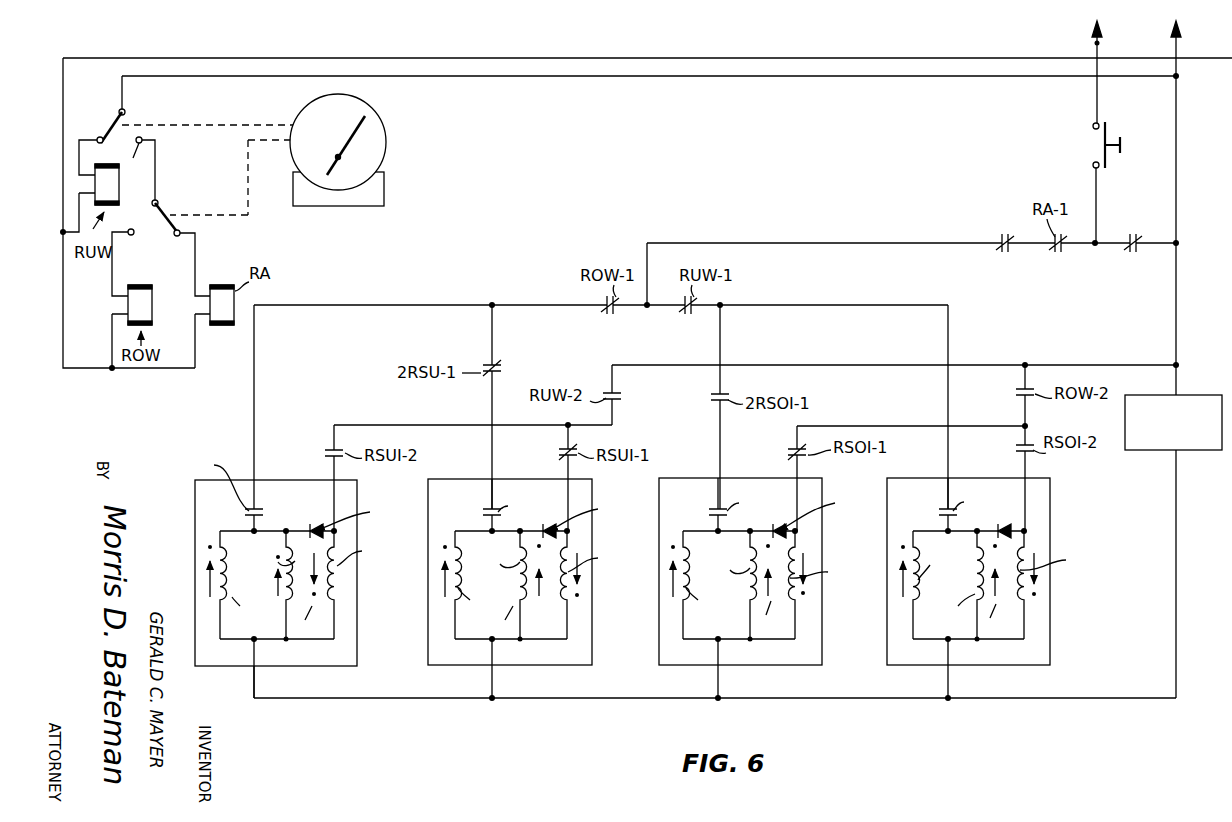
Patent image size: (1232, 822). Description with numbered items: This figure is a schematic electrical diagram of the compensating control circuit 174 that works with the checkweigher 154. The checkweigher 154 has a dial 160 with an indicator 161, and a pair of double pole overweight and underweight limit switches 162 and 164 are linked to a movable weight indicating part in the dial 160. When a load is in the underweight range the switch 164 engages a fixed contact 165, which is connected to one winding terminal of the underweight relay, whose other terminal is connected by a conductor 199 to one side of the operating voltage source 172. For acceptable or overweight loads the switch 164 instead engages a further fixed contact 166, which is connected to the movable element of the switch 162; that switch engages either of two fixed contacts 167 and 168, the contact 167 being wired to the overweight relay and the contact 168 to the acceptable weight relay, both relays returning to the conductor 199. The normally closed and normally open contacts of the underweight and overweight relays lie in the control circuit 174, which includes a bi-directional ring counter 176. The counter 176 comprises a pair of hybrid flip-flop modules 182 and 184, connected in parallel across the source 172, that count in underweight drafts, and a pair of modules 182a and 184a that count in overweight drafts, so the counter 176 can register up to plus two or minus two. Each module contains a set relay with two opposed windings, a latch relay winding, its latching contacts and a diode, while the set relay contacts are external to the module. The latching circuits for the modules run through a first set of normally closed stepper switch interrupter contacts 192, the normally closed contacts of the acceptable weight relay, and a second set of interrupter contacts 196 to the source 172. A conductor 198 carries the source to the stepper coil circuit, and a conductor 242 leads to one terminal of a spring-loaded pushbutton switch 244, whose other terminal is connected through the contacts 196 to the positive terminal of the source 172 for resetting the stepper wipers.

The checkweigher 154 is at (406, 189).
The dial 160 is at (387, 141).
The indicator 161 is at (360, 126).
The overweight limit switch 162 is at (168, 213).
The underweight limit switch 164 is at (119, 113).
The fixed contact 165 is at (98, 139).
The fixed contact 166 is at (138, 170).
The fixed contact 167 is at (131, 236).
The fixed contact 168 is at (178, 237).
The operating voltage source 172 is at (1125, 437).
The compensating control circuit 174 is at (229, 397).
The bi-directional ring counter 176 is at (242, 688).
The hybrid flip-flop module 182 is at (592, 612).
The hybrid flip-flop module 182a is at (822, 645).
The hybrid flip-flop module 184 is at (357, 628).
The hybrid flip-flop module 184a is at (1050, 590).
The stepper switch interrupter contacts 192 is at (1000, 237).
The stepper switch interrupter contacts 196 is at (1138, 252).
The conductor 198 is at (1174, 37).
The conductor 199 is at (1231, 45).
The conductor 242 is at (1099, 104).
The spring-loaded pushbutton switch 244 is at (1107, 155).